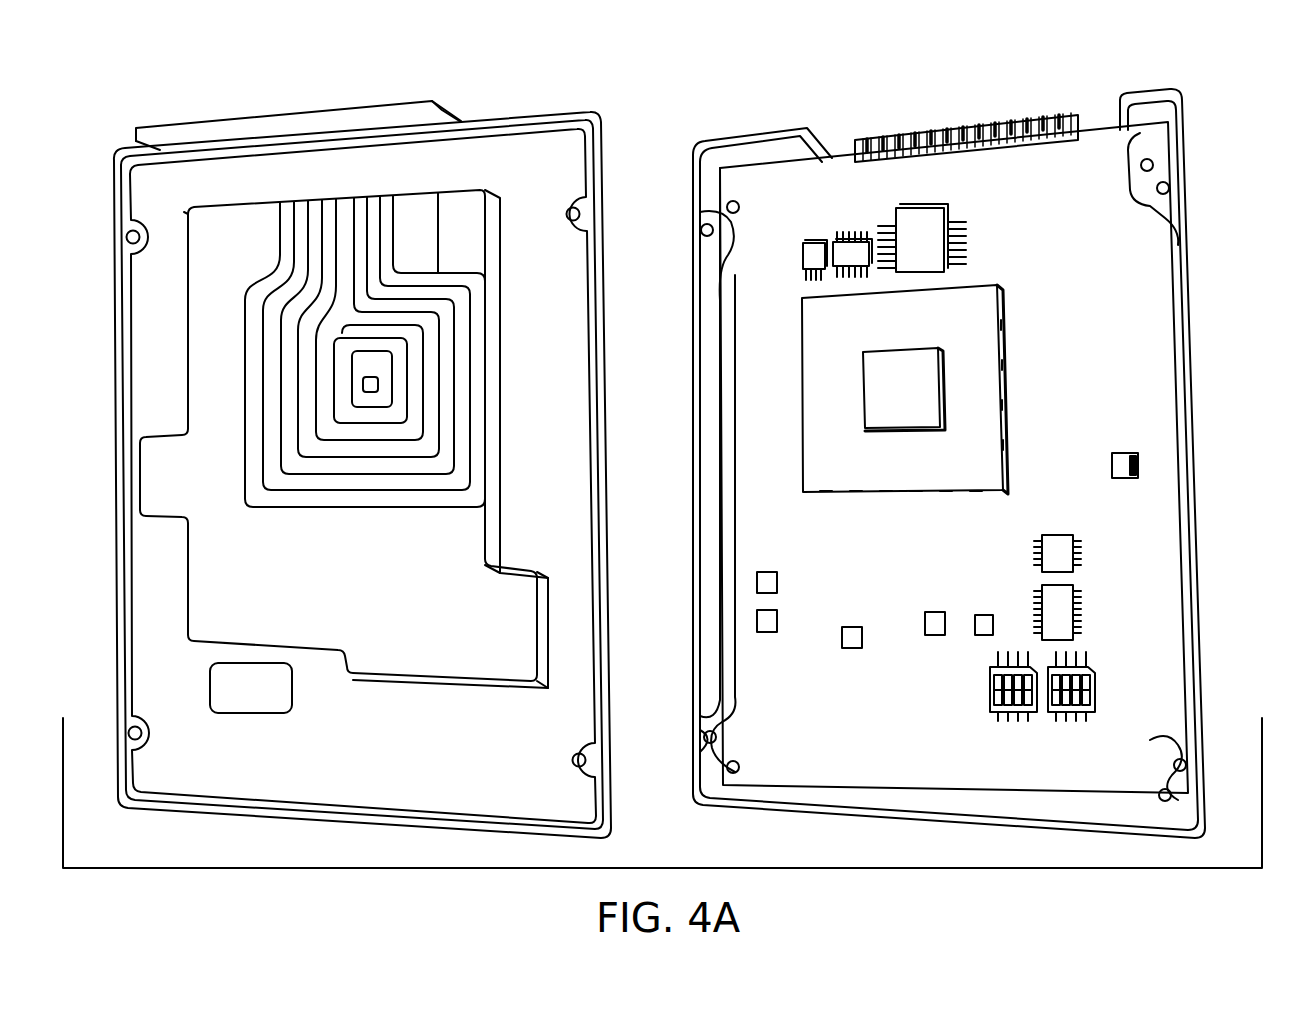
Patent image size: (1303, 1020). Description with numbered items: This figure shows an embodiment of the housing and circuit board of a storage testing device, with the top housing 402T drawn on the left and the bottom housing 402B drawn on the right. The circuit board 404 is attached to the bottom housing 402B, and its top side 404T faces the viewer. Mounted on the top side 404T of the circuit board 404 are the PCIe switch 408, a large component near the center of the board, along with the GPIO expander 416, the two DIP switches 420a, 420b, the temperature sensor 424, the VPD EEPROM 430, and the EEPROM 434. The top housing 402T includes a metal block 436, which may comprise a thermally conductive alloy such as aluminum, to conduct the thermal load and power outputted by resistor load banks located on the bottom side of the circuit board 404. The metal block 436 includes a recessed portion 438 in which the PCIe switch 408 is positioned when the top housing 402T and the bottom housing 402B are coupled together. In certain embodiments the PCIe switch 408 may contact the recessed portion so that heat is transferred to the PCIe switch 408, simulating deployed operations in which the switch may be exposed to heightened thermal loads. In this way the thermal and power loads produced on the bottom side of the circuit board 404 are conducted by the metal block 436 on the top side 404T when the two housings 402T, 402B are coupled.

The top housing 402T is at (541, 107).
The bottom housing 402B is at (1143, 90).
The circuit board 404 is at (1160, 136).
The top side of the circuit board 404T is at (1147, 347).
The PCIe switch 408 is at (990, 284).
The GPIO expander 416 is at (1063, 617).
The DIP switch 420a is at (997, 712).
The DIP switch 420b is at (1089, 712).
The temperature sensor 424 is at (851, 245).
The VPD EEPROM 430 is at (810, 254).
The EEPROM 434 is at (918, 228).
The metal block 436 is at (465, 203).
The recessed portion 438 is at (365, 383).